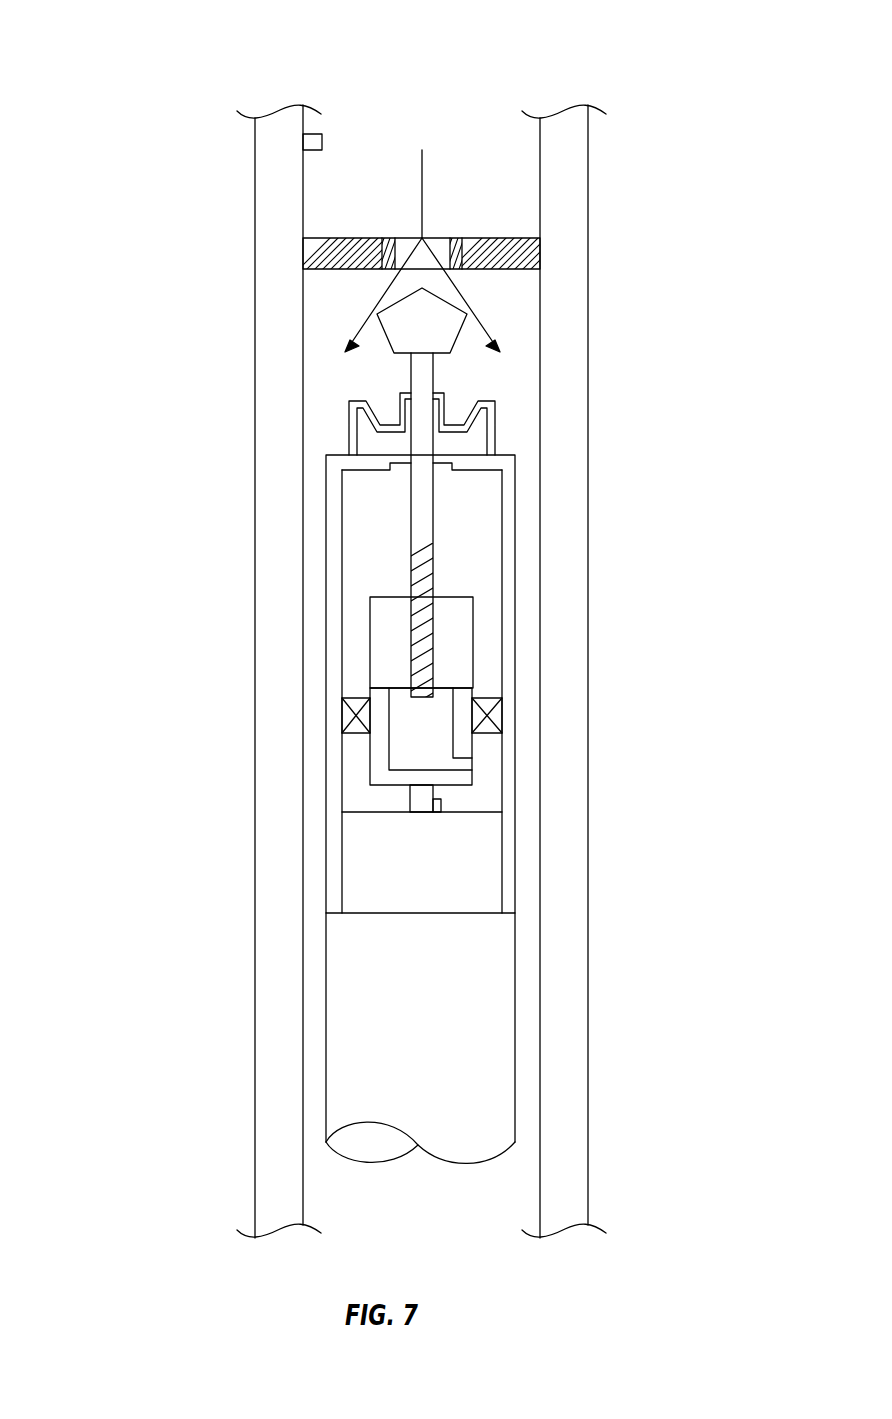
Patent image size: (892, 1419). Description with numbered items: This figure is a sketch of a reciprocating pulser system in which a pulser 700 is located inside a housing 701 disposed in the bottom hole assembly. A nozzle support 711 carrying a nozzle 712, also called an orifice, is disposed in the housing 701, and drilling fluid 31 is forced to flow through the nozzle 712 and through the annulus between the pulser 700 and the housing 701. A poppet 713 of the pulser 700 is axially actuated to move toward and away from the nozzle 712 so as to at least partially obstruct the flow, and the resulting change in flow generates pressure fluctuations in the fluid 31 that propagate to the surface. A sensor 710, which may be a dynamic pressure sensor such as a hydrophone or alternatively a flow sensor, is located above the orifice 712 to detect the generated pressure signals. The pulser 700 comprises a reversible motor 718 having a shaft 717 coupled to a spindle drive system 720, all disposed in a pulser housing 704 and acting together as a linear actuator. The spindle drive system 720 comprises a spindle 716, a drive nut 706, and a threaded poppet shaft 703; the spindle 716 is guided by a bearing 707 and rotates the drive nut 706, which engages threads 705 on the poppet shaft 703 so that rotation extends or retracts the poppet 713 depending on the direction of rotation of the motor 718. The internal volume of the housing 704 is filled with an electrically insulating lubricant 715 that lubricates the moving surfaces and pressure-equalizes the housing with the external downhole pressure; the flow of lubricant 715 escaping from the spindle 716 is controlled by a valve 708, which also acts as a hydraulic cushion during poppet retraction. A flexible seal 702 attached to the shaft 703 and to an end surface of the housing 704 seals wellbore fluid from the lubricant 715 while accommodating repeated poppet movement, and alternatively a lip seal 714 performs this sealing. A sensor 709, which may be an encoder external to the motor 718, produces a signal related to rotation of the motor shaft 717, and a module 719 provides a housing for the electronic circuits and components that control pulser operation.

The pulser 700 is at (130, 47).
The drilling fluid 31 is at (426, 140).
The housing 701 is at (588, 237).
The flexible seal 702 is at (495, 433).
The threaded poppet shaft 703 is at (437, 525).
The pulser housing 704 is at (518, 553).
The threads 705 is at (437, 640).
The drive nut 706 is at (473, 652).
The bearing 707 is at (502, 718).
The valve 708 is at (472, 763).
The sensor 709 is at (443, 810).
The sensor 710 is at (318, 134).
The nozzle support 711 is at (330, 238).
The nozzle 712 is at (437, 238).
The poppet 713 is at (390, 307).
The lip seal 714 is at (399, 453).
The lubricant 715 is at (365, 515).
The spindle 716 is at (365, 763).
The shaft 717 is at (412, 801).
The reversible motor 718 is at (500, 867).
The module 719 is at (515, 1033).
The spindle drive system 720 is at (238, 636).